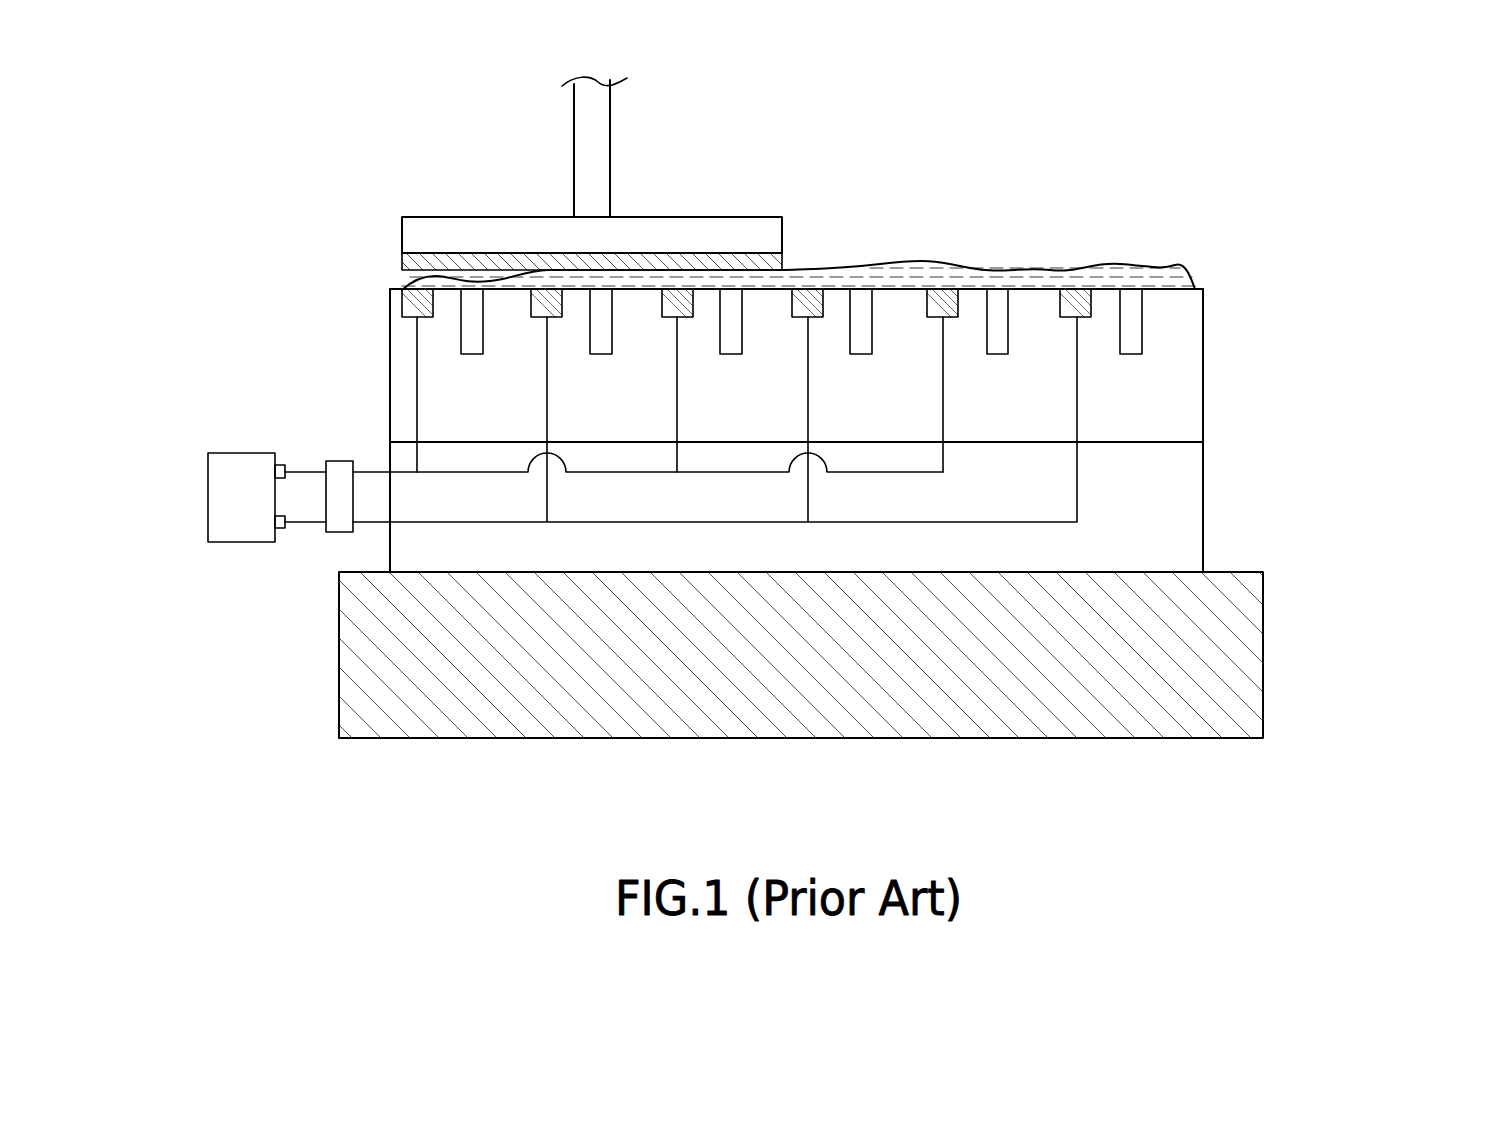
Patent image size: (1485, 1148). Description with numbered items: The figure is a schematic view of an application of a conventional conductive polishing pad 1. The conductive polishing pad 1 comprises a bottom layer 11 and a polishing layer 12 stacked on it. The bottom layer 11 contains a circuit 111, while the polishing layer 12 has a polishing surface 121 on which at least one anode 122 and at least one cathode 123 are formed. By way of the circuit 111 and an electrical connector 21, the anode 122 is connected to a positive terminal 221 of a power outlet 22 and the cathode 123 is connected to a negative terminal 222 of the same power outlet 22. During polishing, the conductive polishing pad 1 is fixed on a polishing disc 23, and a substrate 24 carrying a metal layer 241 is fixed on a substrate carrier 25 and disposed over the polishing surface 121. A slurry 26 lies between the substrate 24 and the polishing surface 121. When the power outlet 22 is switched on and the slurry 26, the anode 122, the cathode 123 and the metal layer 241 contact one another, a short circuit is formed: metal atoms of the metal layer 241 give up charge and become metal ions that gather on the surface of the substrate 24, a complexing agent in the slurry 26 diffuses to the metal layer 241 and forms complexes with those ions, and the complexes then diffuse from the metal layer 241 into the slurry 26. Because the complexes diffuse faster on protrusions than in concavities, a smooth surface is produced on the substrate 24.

The conductive polishing pad 1 is at (911, 492).
The bottom layer 11 is at (1187, 517).
The circuit 111 is at (849, 540).
The polishing layer 12 is at (1187, 390).
The polishing surface 121 is at (1197, 288).
The anode 122 is at (945, 305).
The cathode 123 is at (1075, 305).
The electrical connector 21 is at (337, 472).
The power outlet 22 is at (201, 498).
The positive terminal 221 is at (283, 465).
The negative terminal 222 is at (284, 528).
The polishing disc 23 is at (1253, 665).
The substrate 24 is at (646, 190).
The metal layer 241 is at (768, 263).
The substrate carrier 25 is at (593, 162).
The slurry 26 is at (1148, 277).